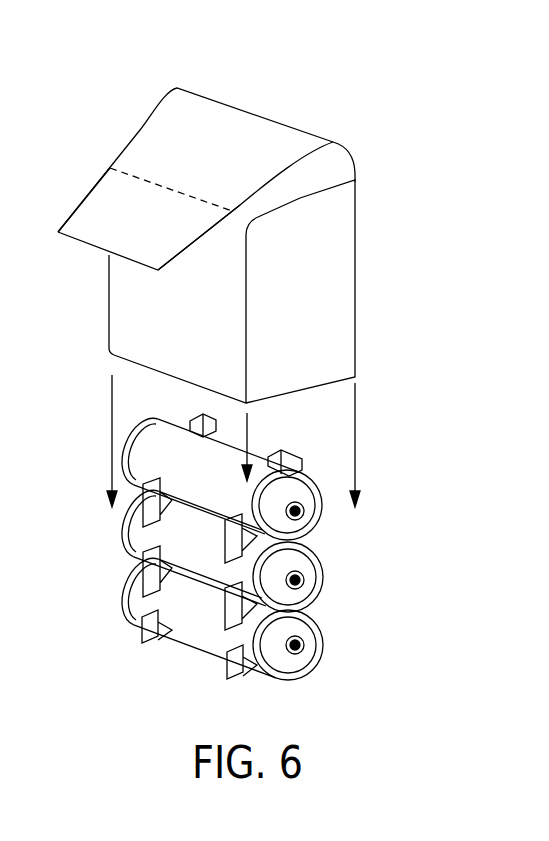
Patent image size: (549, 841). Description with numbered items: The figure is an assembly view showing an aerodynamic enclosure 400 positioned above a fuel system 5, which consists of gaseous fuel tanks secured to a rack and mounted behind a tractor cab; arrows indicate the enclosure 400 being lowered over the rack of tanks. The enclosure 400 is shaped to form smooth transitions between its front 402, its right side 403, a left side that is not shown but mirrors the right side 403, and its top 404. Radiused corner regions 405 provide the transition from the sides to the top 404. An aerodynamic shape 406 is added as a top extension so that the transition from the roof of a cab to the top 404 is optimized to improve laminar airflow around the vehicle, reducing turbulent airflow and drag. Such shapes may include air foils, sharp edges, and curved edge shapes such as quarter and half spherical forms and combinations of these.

The aerodynamic enclosure 400 is at (100, 104).
The front 402 is at (131, 311).
The right side 403 is at (335, 310).
The top 404 is at (230, 143).
The radiused corner regions 405 is at (323, 166).
The aerodynamic shape 406 is at (110, 212).
The fuel system 5 is at (325, 576).